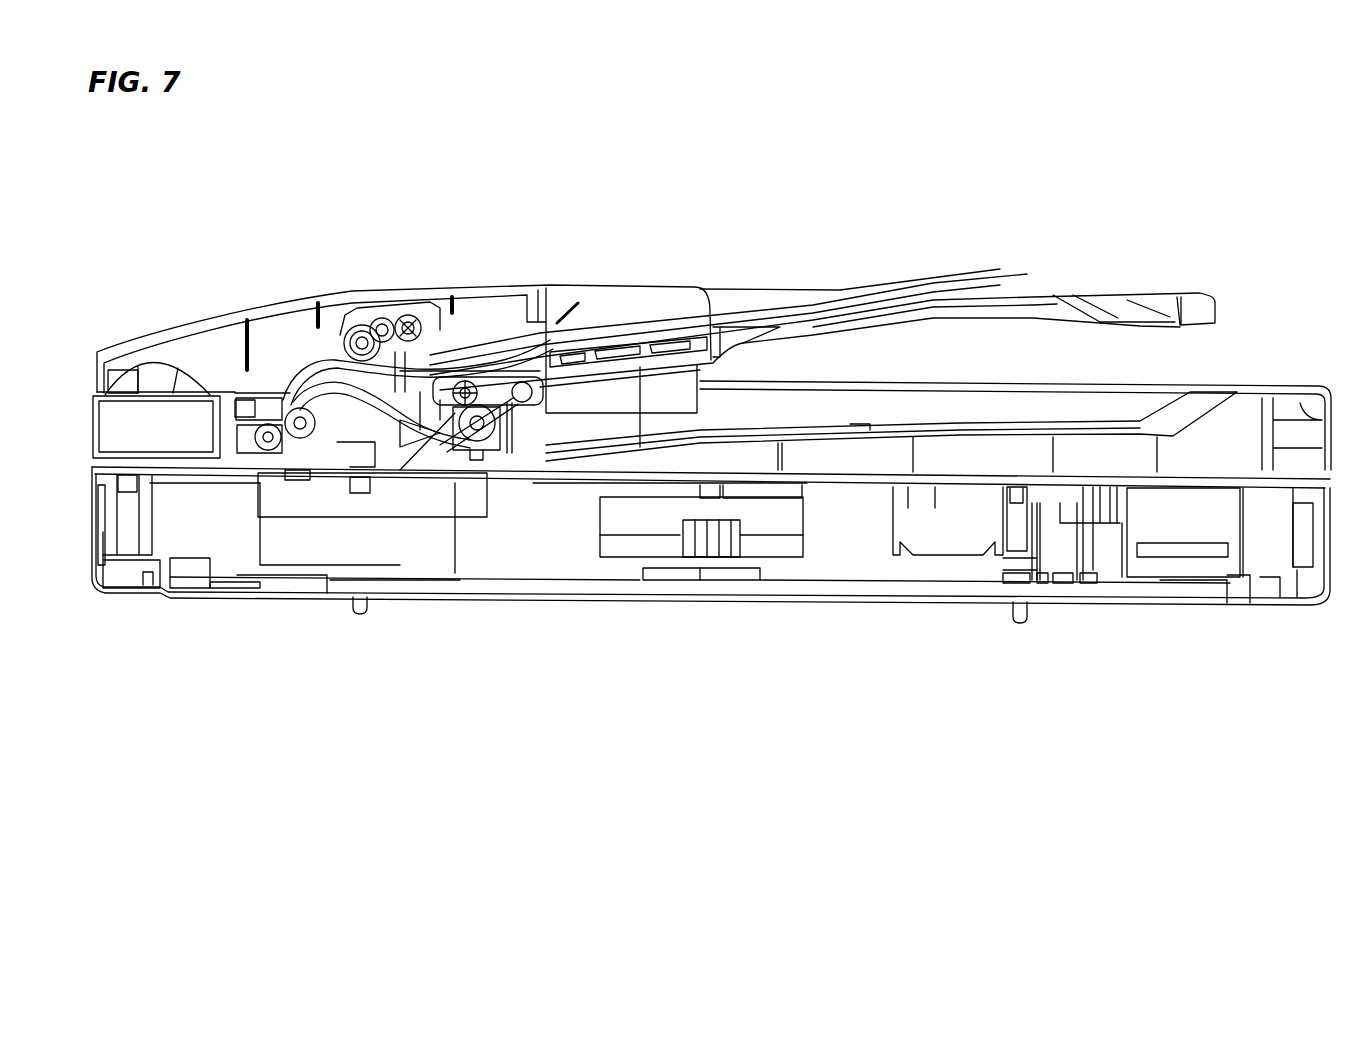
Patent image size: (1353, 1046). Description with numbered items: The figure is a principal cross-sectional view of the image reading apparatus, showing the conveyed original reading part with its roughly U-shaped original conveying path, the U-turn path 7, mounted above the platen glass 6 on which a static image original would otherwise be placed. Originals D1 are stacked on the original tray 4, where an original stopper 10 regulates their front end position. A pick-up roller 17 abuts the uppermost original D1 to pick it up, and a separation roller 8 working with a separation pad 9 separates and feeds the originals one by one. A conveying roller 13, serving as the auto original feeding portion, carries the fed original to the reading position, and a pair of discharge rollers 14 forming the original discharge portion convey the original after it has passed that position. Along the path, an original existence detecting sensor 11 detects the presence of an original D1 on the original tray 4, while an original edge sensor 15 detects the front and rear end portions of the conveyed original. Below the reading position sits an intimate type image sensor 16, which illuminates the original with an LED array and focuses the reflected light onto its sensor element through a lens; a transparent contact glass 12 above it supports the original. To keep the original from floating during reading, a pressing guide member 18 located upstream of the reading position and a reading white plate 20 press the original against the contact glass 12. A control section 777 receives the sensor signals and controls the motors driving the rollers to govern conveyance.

The original tray 4 is at (1033, 307).
The platen glass 6 is at (513, 480).
The U-turn path 7 is at (303, 395).
The separation roller 8 is at (357, 322).
The separation pad 9 is at (374, 320).
The original stopper 10 is at (410, 317).
The original existence detecting sensor 11 is at (437, 338).
The contact glass 12 is at (322, 483).
The conveying roller 13 is at (267, 400).
The pair of discharge rollers 14 is at (567, 347).
The original edge sensor 15 is at (288, 477).
The intimate type image sensor 16 is at (357, 490).
The pick-up roller 17 is at (433, 325).
The pressing guide member 18 is at (298, 480).
The reading white plate 20 is at (367, 480).
The control section 777 is at (1185, 552).
The original D1 is at (970, 262).